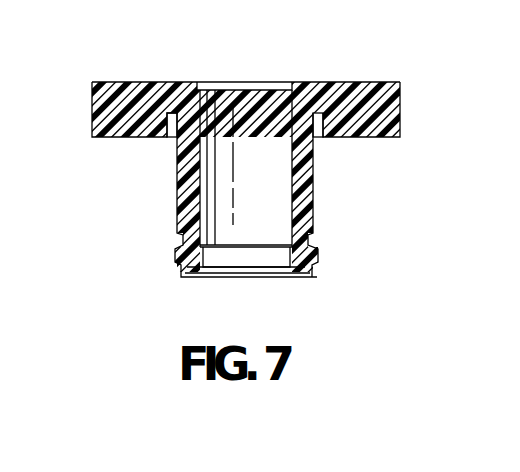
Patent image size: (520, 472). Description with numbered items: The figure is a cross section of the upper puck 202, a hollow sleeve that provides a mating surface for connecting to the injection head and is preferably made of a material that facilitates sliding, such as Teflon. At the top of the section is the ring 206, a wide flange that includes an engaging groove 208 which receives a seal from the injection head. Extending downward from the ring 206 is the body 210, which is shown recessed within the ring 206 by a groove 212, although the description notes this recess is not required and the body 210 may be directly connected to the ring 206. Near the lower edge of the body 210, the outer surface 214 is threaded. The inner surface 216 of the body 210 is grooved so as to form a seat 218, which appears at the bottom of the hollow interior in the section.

The upper puck 202 is at (426, 78).
The ring 206 is at (92, 124).
The engaging groove 208 is at (162, 82).
The body 210 is at (177, 215).
The groove 212 is at (175, 135).
The outer surface 214 is at (313, 258).
The inner surface 216 is at (298, 196).
The seat 218 is at (277, 253).